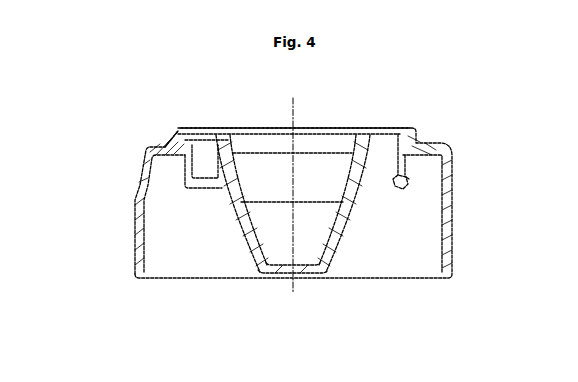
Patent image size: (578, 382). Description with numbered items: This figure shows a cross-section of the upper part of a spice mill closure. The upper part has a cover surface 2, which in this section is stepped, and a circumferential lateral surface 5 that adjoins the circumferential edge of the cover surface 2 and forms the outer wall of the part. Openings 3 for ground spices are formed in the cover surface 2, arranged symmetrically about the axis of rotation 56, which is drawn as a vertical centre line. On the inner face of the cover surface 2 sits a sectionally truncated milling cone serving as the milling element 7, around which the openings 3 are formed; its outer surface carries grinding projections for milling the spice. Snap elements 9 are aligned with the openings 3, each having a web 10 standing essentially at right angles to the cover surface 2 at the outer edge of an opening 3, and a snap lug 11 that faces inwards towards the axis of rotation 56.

The cover surface 2 is at (170, 147).
The openings 3 is at (381, 127).
The lateral surface 5 is at (452, 243).
The milling element 7 is at (252, 252).
The snap elements 9 is at (408, 178).
The web 10 is at (450, 148).
The snap lug 11 is at (399, 180).
The axis of rotation 56 is at (293, 98).